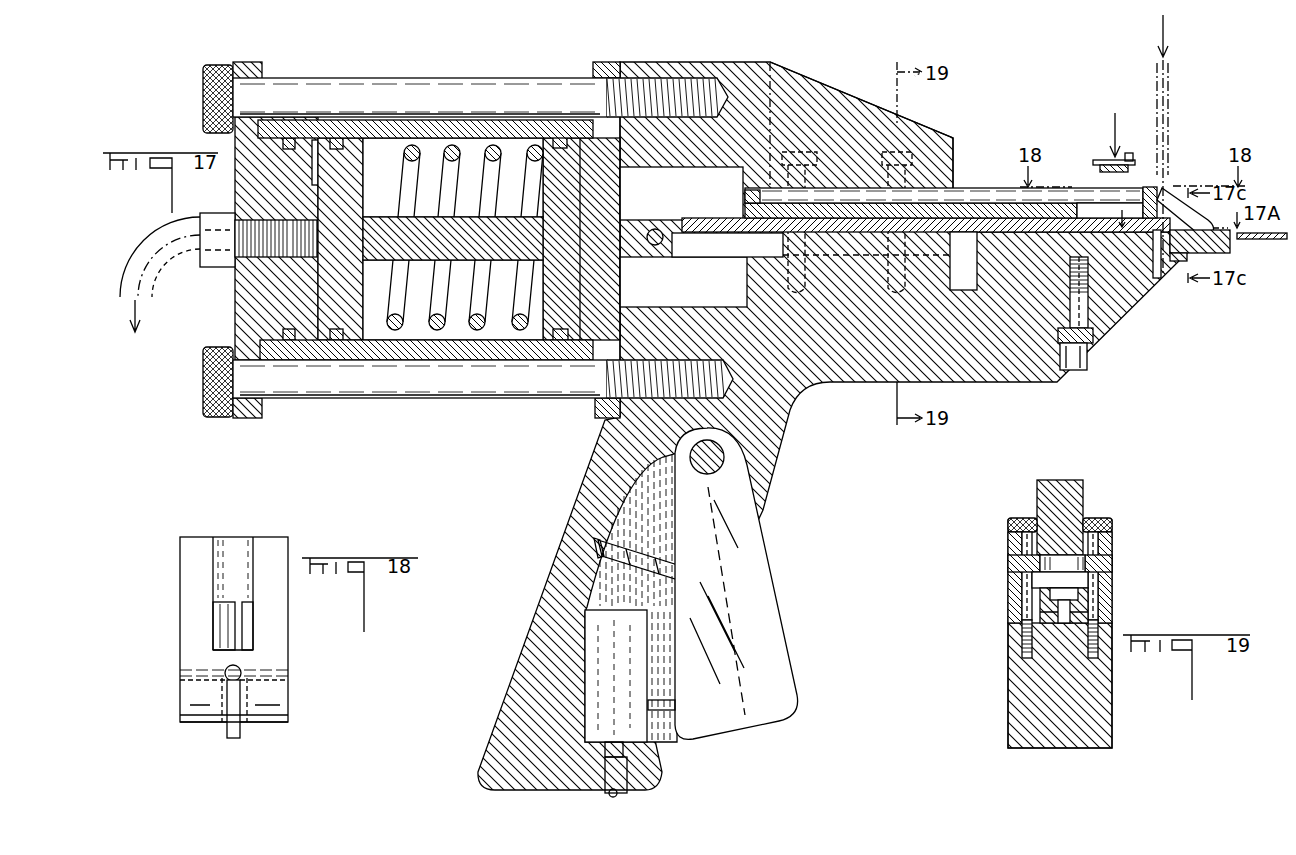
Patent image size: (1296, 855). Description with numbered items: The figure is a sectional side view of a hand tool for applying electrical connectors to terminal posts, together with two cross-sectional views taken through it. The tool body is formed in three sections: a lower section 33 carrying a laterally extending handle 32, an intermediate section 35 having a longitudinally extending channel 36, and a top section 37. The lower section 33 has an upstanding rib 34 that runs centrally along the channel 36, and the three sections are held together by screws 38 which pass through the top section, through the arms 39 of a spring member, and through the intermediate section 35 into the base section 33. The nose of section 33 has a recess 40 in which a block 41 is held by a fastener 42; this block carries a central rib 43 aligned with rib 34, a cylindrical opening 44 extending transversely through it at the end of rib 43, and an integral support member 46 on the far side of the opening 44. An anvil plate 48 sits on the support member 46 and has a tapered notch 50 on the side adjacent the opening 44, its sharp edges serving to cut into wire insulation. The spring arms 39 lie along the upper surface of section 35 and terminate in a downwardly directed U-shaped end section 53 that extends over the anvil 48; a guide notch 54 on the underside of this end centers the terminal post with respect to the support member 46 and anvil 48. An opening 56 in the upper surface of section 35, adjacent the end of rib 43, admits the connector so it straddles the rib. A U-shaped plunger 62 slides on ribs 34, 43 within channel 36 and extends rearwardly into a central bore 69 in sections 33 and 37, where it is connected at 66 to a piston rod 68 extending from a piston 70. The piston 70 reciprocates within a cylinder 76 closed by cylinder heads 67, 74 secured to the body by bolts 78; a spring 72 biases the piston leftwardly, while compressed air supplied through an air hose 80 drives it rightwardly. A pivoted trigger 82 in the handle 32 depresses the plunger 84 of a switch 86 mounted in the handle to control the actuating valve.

In FIG. 17, the handle 32 is at (558, 572).
In FIG. 17, the lower body section 33 is at (868, 385).
In FIG. 19, the lower body section 33 is at (1112, 724).
In FIG. 17, the rib 34 is at (745, 268).
In FIG. 19, the rib 34 is at (1068, 606).
In FIG. 17, the intermediate body section 35 is at (978, 197).
In FIG. 18, the intermediate body section 35 is at (231, 550).
In FIG. 19, the intermediate body section 35 is at (1040, 583).
In FIG. 17, the channel 36 is at (998, 212).
In FIG. 19, the channel 36 is at (1050, 613).
In FIG. 17, the top body section 37 is at (810, 92).
In FIG. 19, the top body section 37 is at (1078, 485).
In FIG. 17, the screws 38 is at (813, 152).
In FIG. 19, the screws 38 is at (1012, 539).
In FIG. 17, the spring arms 39 is at (957, 188).
In FIG. 18, the spring arms 39 is at (282, 552).
In FIG. 19, the spring arms 39 is at (1015, 566).
In FIG. 17, the recess 40 is at (1026, 276).
In FIG. 17, the block 41 is at (1112, 290).
In FIG. 17, the fastener 42 is at (1087, 346).
In FIG. 17, the rib 43 is at (1030, 225).
In FIG. 18, the rib 43 is at (230, 627).
In FIG. 17, the cylindrical opening 44 is at (1159, 280).
In FIG. 18, the cylindrical opening 44 is at (240, 668).
In FIG. 17, the support member 46 is at (1230, 253).
In FIG. 18, the support member 46 is at (241, 735).
In FIG. 18, the anvil plate 48 is at (180, 687).
In FIG. 18, the notch 50 is at (244, 690).
In FIG. 17, the U-shaped end section 53 is at (1205, 217).
In FIG. 18, the U-shaped end section 53 is at (186, 709).
In FIG. 17, the guide notch 54 is at (1235, 241).
In FIG. 17, the opening 56 is at (1133, 202).
In FIG. 18, the opening 56 is at (248, 621).
In FIG. 17, the U-shaped plunger 62 is at (862, 243).
In FIG. 19, the U-shaped plunger 62 is at (1085, 601).
In FIG. 17, the connection 66 is at (652, 228).
In FIG. 17, the cylinder head 67 is at (612, 198).
In FIG. 17, the piston rod 68 is at (468, 222).
In FIG. 17, the central bore 69 is at (722, 173).
In FIG. 17, the piston 70 is at (318, 275).
In FIG. 17, the spring 72 is at (447, 326).
In FIG. 17, the cylinder head 74 is at (243, 184).
In FIG. 17, the cylinder 76 is at (404, 138).
In FIG. 17, the bolts 78 is at (346, 90).
In FIG. 17, the air hose 80 is at (200, 262).
In FIG. 17, the trigger 82 is at (767, 605).
In FIG. 17, the switch plunger 84 is at (664, 697).
In FIG. 17, the switch 86 is at (597, 652).